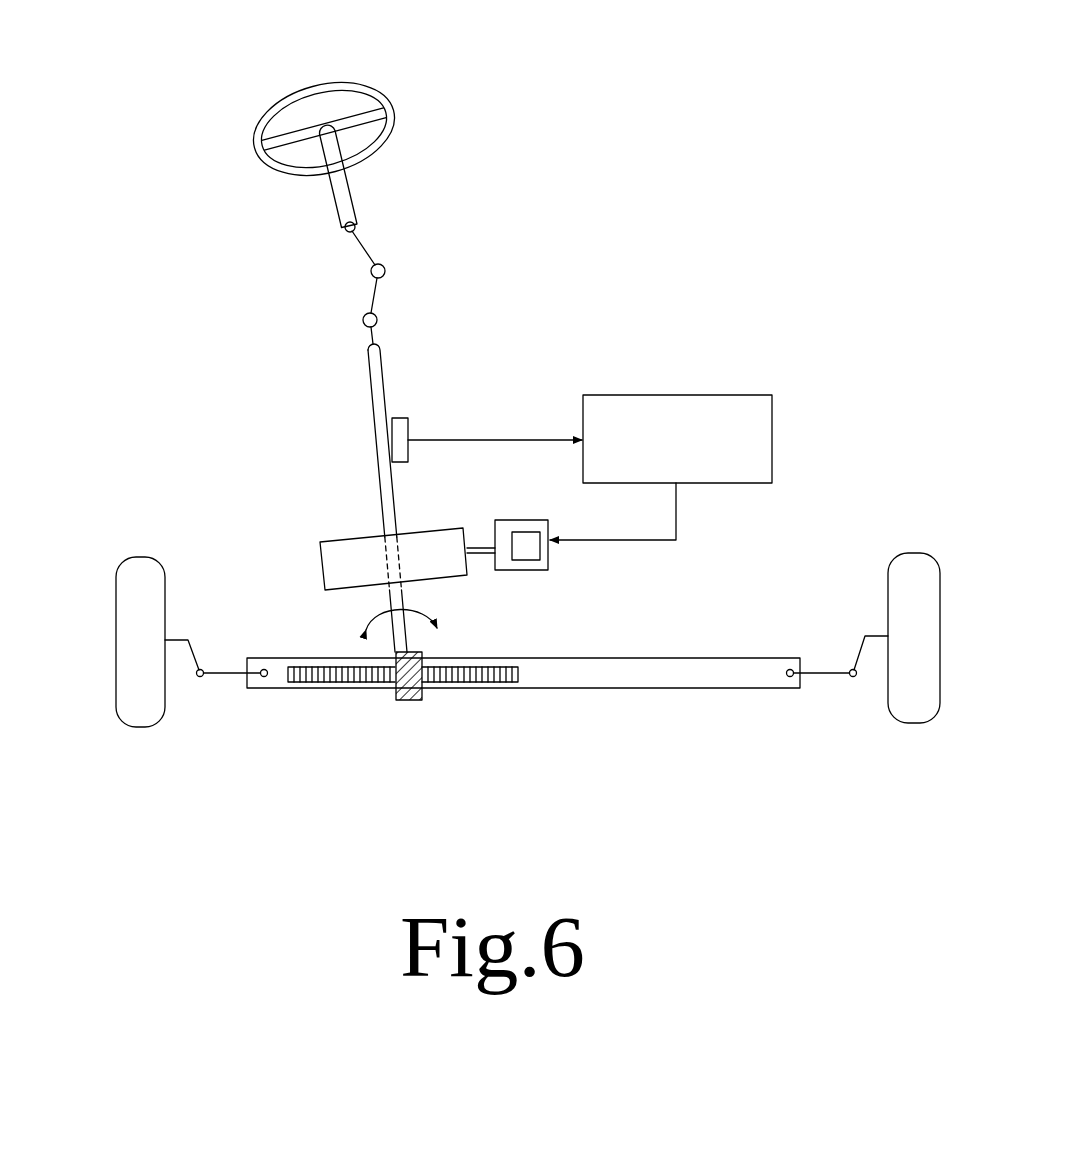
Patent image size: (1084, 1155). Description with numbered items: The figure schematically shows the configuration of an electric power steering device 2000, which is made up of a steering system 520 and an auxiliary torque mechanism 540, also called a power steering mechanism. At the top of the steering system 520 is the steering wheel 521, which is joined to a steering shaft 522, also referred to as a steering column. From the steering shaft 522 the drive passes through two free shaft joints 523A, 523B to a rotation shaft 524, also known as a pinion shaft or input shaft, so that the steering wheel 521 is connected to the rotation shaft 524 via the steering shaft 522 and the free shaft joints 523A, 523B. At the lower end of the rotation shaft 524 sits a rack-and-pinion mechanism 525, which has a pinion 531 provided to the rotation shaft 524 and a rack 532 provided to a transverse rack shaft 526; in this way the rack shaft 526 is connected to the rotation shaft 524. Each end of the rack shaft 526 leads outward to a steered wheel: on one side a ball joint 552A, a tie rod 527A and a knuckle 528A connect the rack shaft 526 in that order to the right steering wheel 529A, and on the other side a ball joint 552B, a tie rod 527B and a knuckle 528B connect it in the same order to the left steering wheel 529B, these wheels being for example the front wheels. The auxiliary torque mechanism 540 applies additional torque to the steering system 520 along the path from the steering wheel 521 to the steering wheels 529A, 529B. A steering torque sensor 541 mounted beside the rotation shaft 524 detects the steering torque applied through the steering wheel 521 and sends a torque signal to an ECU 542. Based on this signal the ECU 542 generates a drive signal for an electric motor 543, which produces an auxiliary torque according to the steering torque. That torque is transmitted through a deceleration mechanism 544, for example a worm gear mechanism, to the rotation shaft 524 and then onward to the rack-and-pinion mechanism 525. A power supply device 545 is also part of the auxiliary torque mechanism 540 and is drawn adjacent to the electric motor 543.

The electric power steering device 2000 is at (573, 116).
The steering system 520 is at (326, 354).
The steering wheel 521 is at (268, 112).
The steering shaft 522 is at (352, 196).
The free shaft joint 523A is at (385, 268).
The free shaft joint 523B is at (378, 318).
The rotation shaft 524 is at (382, 378).
The rack-and-pinion mechanism 525 is at (422, 706).
The rack shaft 526 is at (578, 688).
The tie rod 527A is at (212, 675).
The tie rod 527B is at (825, 672).
The knuckle 528A is at (190, 640).
The knuckle 528B is at (865, 636).
The right steering wheel 529A is at (140, 716).
The left steering wheel 529B is at (908, 710).
The pinion 531 is at (398, 702).
The rack 532 is at (332, 688).
The auxiliary torque mechanism 540 is at (619, 358).
The steering torque sensor 541 is at (408, 420).
The ECU 542 is at (736, 398).
The electric motor 543 is at (524, 520).
The deceleration mechanism 544 is at (322, 542).
The power supply device 545 is at (528, 548).
The ball joint 552A is at (258, 690).
The ball joint 552B is at (790, 688).